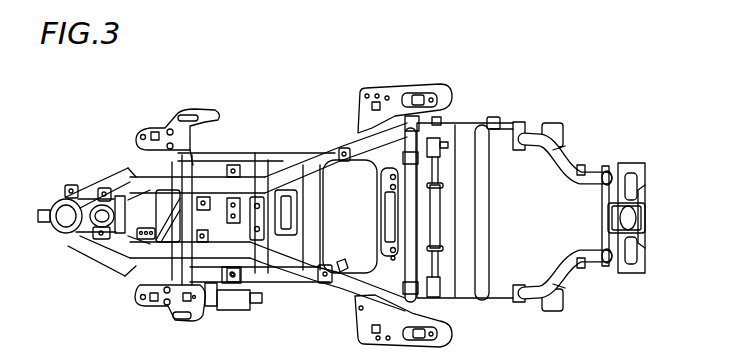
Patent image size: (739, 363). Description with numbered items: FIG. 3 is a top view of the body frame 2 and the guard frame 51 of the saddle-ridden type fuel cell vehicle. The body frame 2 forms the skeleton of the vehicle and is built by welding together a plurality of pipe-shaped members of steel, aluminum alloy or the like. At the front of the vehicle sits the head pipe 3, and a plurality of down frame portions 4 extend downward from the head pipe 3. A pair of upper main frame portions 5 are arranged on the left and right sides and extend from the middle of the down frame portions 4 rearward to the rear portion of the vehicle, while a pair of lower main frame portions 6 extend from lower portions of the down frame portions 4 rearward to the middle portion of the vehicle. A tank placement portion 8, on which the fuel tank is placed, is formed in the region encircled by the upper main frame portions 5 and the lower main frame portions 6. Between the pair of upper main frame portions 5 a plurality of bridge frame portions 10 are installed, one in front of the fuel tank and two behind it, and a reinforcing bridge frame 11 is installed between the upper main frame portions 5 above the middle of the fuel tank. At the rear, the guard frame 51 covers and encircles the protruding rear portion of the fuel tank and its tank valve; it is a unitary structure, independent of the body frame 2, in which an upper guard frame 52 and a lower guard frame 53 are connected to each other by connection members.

The body frame 2 is at (309, 128).
The head pipe 3 is at (78, 218).
The down frame portions 4 is at (90, 190).
The upper main frame portions 5 is at (135, 280).
The lower main frame portions 6 is at (258, 158).
The tank placement portion 8 is at (203, 307).
The bridge frame portions 10 is at (213, 187).
The reinforcing bridge frame 11 is at (291, 283).
The guard frame 51 is at (449, 278).
The upper guard frame 52 is at (438, 178).
The lower guard frame 53 is at (386, 188).